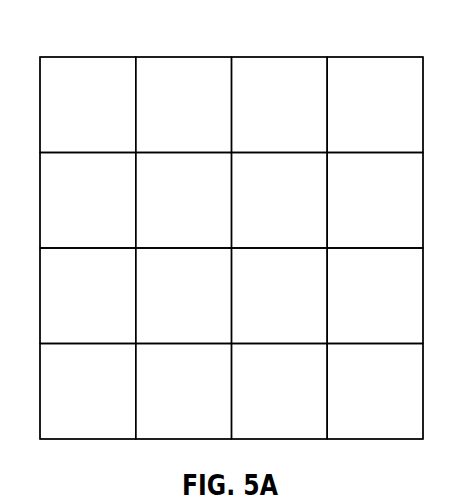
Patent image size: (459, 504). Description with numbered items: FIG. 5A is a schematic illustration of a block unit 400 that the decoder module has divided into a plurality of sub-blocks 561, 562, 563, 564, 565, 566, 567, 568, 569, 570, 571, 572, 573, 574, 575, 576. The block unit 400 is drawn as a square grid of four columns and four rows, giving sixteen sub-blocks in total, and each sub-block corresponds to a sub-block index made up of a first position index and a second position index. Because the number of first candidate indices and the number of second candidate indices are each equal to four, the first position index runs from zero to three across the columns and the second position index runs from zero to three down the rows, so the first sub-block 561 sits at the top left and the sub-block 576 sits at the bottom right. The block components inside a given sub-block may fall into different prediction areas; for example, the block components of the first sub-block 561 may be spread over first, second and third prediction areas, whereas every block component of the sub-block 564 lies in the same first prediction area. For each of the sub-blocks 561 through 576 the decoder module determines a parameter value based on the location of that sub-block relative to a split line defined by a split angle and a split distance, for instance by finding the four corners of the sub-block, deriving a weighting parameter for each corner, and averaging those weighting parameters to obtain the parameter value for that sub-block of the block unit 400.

The block unit 400 is at (183, 56).
The first sub-block 561 is at (88, 105).
The sub-block 562 is at (184, 105).
The sub-block 563 is at (280, 105).
The sub-block 564 is at (375, 105).
The sub-block 565 is at (88, 201).
The sub-block 566 is at (184, 201).
The sub-block 567 is at (280, 201).
The sub-block 568 is at (375, 201).
The sub-block 569 is at (88, 296).
The sub-block 570 is at (184, 296).
The sub-block 571 is at (280, 296).
The sub-block 572 is at (375, 296).
The sub-block 573 is at (88, 392).
The sub-block 574 is at (184, 392).
The sub-block 575 is at (280, 392).
The sub-block 576 is at (375, 392).